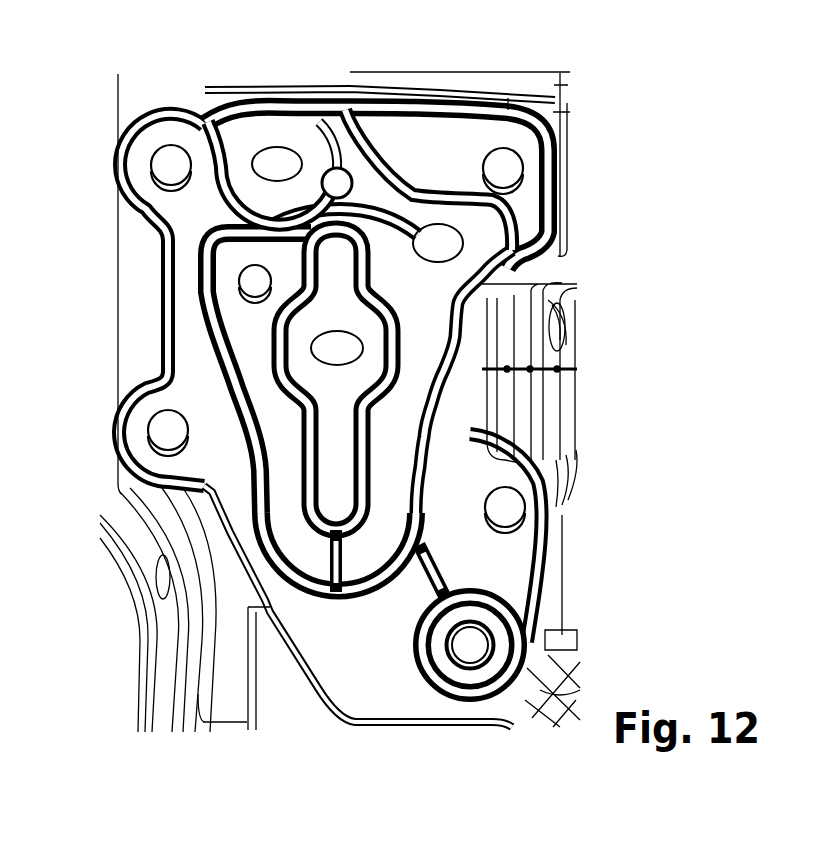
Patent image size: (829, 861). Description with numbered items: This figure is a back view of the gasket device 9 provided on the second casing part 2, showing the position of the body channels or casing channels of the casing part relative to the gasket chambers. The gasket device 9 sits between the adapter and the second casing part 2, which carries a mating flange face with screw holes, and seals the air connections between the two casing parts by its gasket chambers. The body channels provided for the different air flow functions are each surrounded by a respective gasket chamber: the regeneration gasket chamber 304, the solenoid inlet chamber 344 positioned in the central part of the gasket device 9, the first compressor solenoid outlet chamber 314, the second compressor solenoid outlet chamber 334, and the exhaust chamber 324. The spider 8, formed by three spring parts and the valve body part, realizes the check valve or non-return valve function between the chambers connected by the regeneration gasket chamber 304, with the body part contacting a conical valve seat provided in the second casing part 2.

The second casing part 2 is at (567, 114).
The spider 8 is at (346, 178).
The gasket device 9 is at (455, 380).
The regeneration gasket chamber 304 is at (293, 140).
The first compressor solenoid outlet chamber 314 is at (220, 289).
The exhaust chamber 324 is at (503, 627).
The second compressor solenoid outlet chamber 334 is at (473, 252).
The solenoid inlet chamber 344 is at (347, 467).